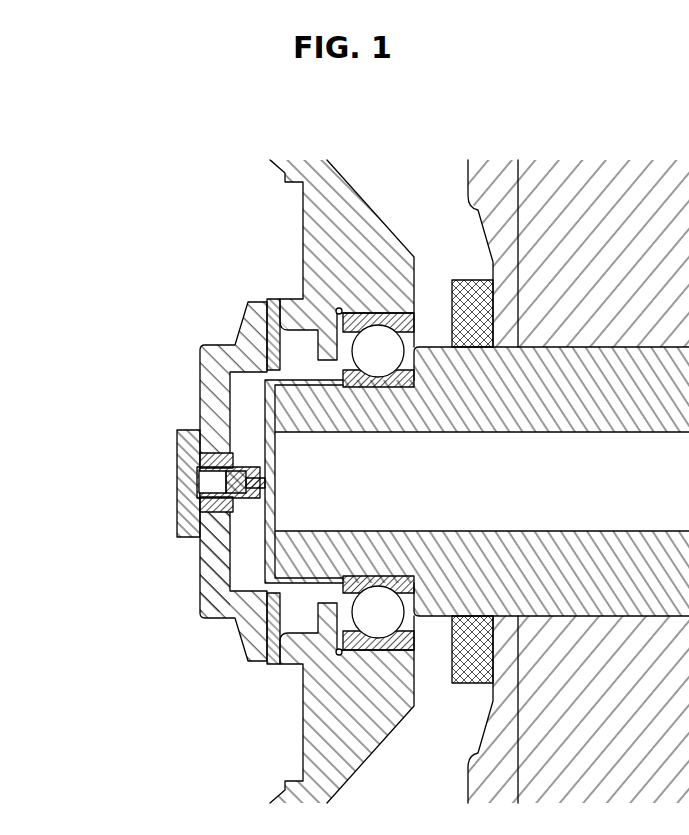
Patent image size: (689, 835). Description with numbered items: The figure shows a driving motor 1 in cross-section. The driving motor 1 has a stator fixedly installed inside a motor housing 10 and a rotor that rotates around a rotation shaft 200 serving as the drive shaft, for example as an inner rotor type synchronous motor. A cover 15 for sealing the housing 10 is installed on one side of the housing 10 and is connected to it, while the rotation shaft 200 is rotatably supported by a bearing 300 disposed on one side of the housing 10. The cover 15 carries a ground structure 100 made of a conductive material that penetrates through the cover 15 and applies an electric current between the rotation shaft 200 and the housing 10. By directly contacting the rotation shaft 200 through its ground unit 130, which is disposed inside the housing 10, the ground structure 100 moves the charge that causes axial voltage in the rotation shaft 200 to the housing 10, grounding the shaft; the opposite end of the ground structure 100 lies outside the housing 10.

The driving motor 1 is at (355, 453).
The motor housing 10 is at (322, 208).
The cover 15 is at (218, 396).
The ground structure 100 is at (168, 466).
The ground unit 130 is at (200, 548).
The rotation shaft 200 is at (443, 362).
The bearing 300 is at (370, 300).